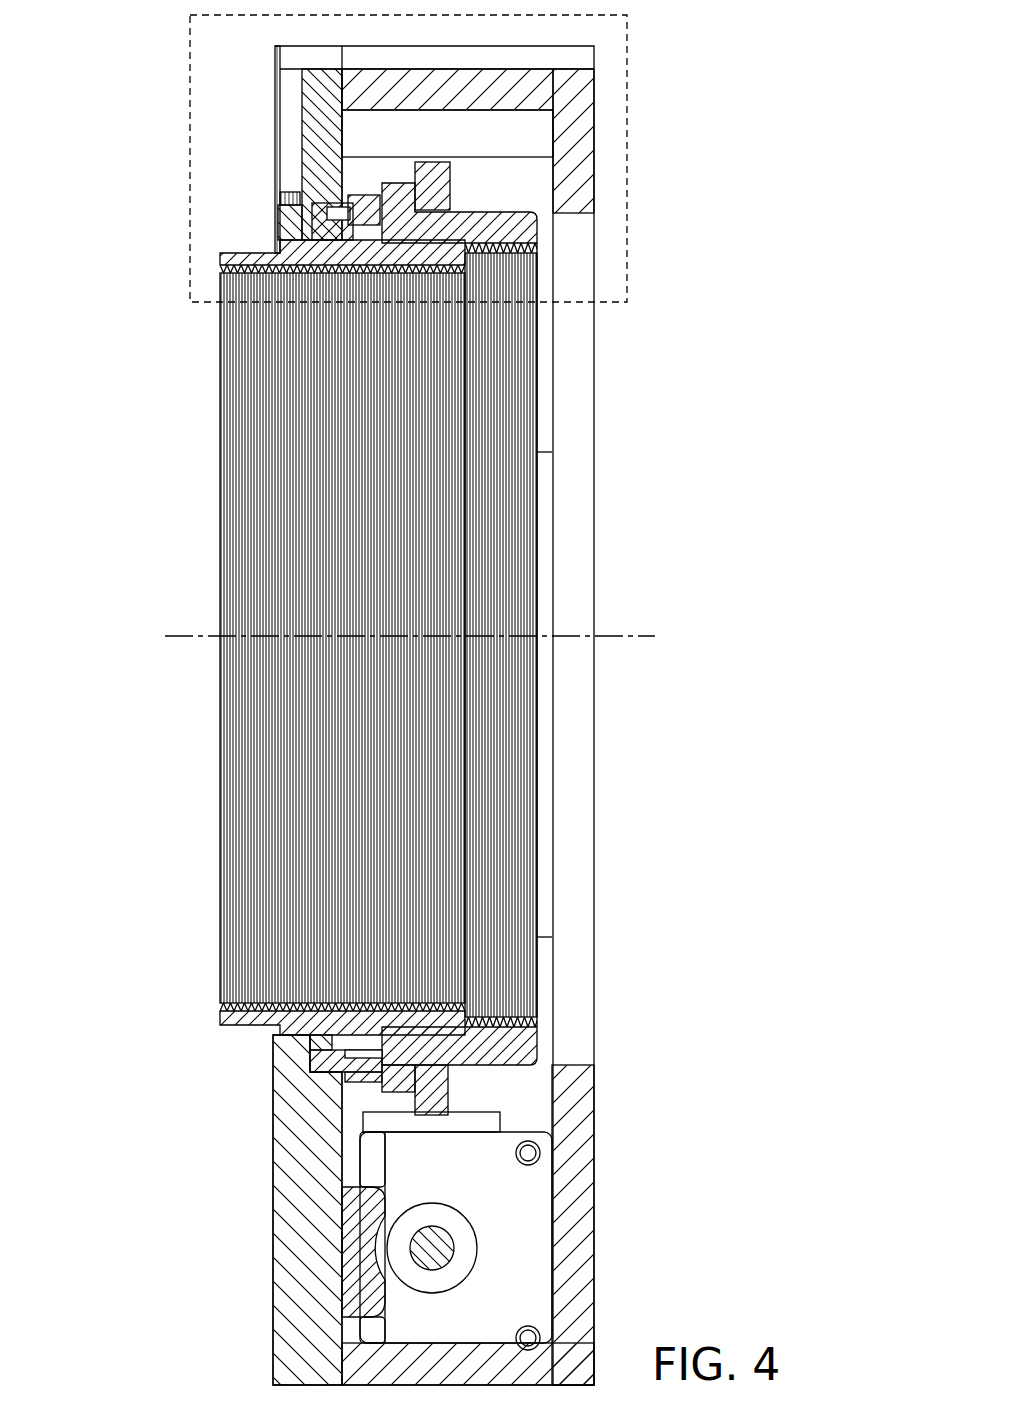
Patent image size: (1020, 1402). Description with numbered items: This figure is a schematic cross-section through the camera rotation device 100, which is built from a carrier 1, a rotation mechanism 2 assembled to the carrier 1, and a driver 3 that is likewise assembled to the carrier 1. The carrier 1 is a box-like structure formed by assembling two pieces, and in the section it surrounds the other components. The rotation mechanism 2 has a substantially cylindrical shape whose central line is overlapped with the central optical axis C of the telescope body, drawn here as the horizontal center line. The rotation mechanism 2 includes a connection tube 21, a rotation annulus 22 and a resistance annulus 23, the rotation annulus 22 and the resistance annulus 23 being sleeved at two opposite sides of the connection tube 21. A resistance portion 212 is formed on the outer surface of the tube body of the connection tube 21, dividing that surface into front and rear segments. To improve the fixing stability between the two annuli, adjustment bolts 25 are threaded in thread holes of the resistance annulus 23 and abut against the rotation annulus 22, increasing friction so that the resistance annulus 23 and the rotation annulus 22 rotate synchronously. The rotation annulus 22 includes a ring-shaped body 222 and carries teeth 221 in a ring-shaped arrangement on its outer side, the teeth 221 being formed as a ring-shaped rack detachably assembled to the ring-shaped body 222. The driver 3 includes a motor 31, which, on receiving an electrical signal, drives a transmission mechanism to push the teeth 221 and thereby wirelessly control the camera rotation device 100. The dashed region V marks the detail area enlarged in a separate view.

The carrier 1 is at (273, 1240).
The rotation mechanism 2 is at (218, 1018).
The driver 3 is at (499, 1216).
The connection tube 21 is at (218, 262).
The rotation annulus 22 is at (532, 235).
The resistance annulus 23 is at (324, 209).
The adjustment bolt 25 is at (367, 196).
The motor 31 is at (432, 1248).
The camera rotation device 100 is at (393, 626).
The resistance portion 212 is at (305, 236).
The teeth 221 is at (407, 1100).
The ring-shaped body 222 is at (505, 1048).
The enlarged view region V is at (190, 101).
The central optical axis C is at (185, 636).